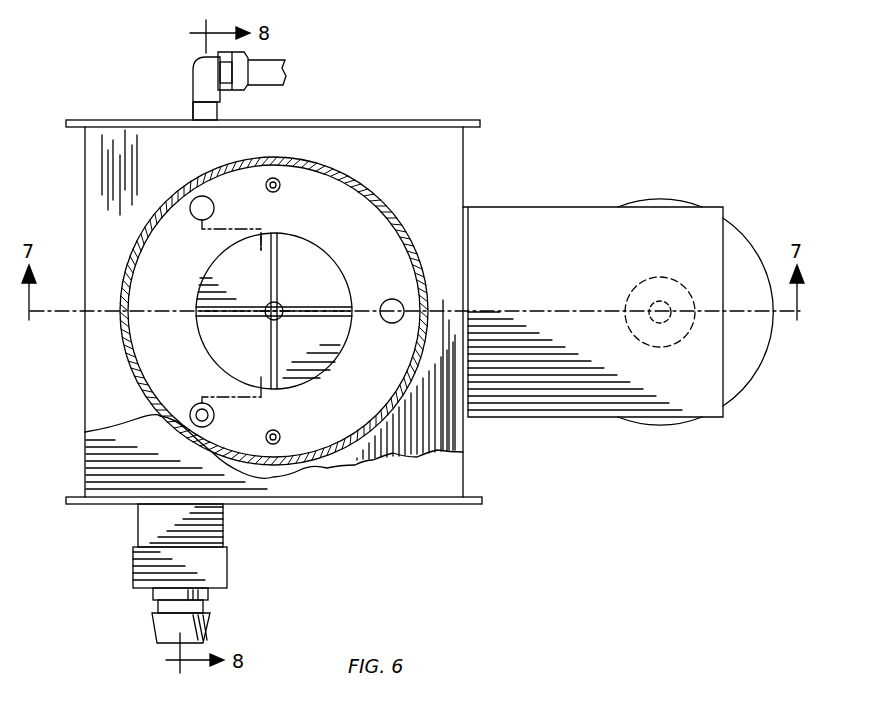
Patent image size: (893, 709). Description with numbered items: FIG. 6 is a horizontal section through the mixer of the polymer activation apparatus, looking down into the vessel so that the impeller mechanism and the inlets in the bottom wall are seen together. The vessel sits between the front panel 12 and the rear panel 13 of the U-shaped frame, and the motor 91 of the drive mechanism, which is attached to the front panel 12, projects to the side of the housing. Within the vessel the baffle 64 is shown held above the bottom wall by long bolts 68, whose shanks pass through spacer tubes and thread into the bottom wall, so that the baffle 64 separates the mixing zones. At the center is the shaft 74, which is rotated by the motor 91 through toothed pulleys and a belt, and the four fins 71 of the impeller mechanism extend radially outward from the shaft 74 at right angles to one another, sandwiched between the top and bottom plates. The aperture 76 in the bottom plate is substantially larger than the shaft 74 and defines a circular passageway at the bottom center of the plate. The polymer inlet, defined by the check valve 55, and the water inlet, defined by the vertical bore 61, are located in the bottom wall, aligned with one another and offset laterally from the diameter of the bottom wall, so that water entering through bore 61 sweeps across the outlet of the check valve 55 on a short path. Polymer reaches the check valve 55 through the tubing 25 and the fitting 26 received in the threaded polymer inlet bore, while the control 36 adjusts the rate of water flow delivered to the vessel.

The front panel 12 is at (440, 120).
The rear panel 13 is at (410, 506).
The tubing 25 is at (272, 68).
The fitting 26 is at (210, 62).
The control 36 is at (207, 625).
The check valve 55 is at (190, 417).
The vertical bore 61 is at (193, 197).
The baffle 64 is at (452, 483).
The long bolts 68 is at (273, 178).
The fins 71 is at (276, 302).
The shaft 74 is at (266, 306).
The aperture 76 is at (320, 347).
The motor 91 is at (663, 419).